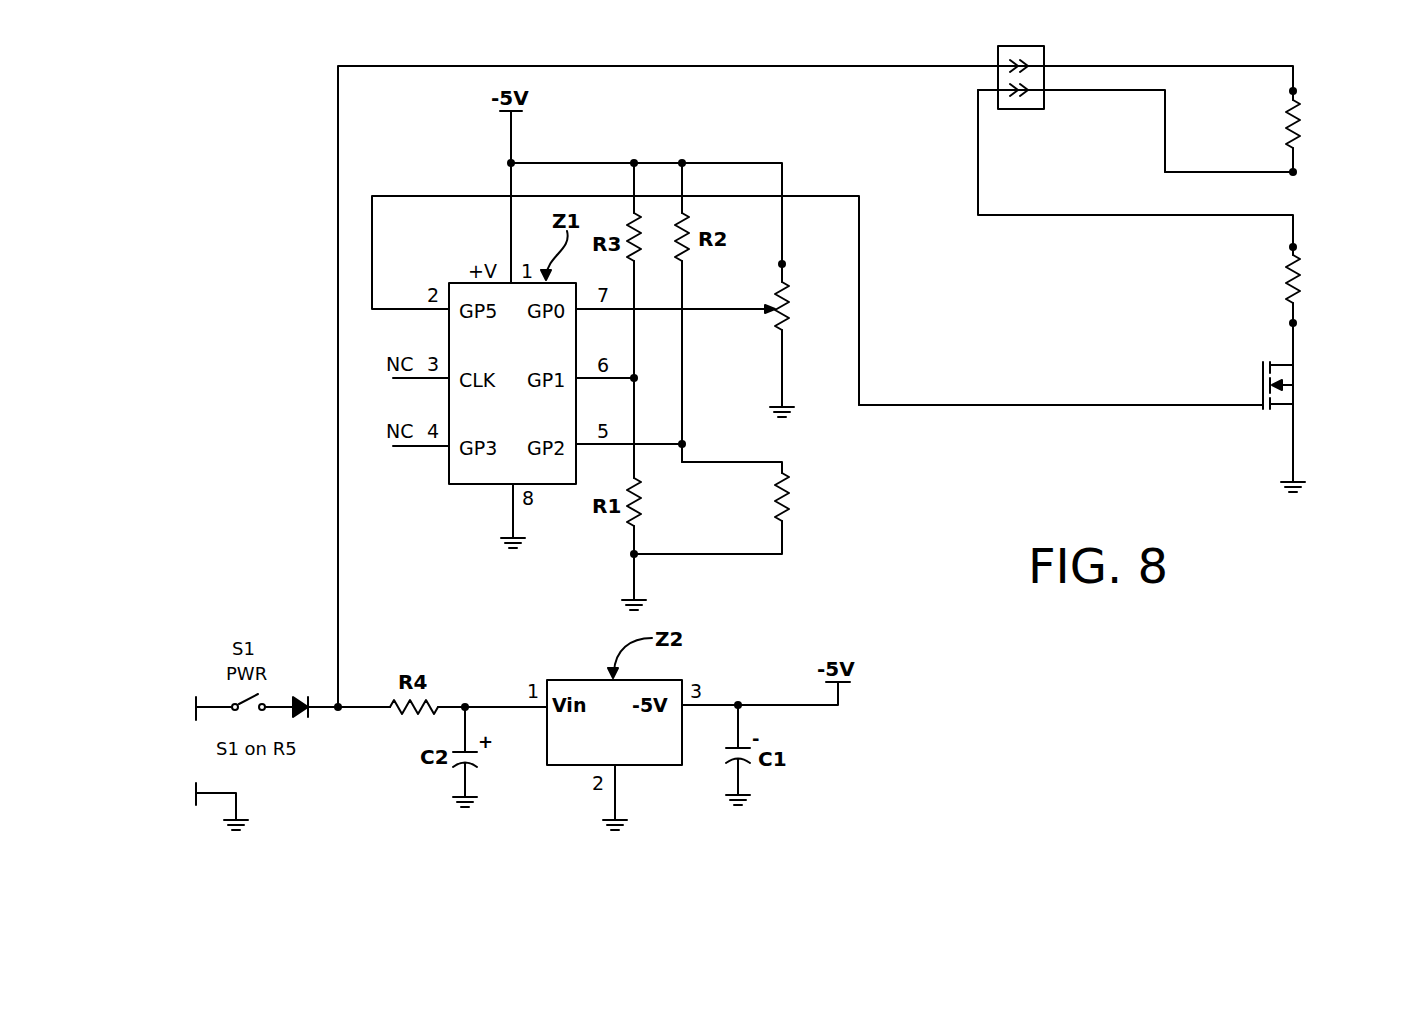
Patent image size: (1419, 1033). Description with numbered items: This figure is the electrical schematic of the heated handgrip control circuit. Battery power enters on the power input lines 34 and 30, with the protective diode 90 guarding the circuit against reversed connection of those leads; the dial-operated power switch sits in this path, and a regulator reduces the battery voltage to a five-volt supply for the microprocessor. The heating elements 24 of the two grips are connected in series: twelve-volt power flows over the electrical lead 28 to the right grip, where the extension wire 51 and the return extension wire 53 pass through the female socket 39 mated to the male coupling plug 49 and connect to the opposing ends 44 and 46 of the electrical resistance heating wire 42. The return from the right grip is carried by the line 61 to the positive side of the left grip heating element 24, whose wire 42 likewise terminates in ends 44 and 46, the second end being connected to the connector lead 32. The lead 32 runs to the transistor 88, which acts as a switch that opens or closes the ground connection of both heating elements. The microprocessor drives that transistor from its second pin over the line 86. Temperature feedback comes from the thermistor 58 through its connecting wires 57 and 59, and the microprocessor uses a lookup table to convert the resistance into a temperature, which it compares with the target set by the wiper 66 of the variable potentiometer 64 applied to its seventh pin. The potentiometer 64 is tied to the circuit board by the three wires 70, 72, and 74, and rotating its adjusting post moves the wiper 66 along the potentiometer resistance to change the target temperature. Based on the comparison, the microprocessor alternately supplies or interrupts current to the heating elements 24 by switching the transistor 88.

The electrical resistance heating element 24 is at (1291, 209).
The electrical lead 28 is at (337, 280).
The power input line 30 is at (217, 793).
The connector lead 32 is at (1295, 346).
The power input line 34 is at (207, 703).
The female socket 39 is at (1045, 54).
The electrical resistance heating wire 42 is at (1285, 125).
The heating wire end 44 is at (1296, 90).
The heating wire end 46 is at (1291, 174).
The male coupling plug 49 is at (998, 78).
The extension wire 51 is at (1170, 65).
The extension wire 53 is at (1160, 130).
The thermistor connecting wire 57 is at (735, 461).
The thermistor 58 is at (797, 497).
The thermistor connecting wire 59 is at (738, 556).
The connector lead 61 is at (1082, 216).
The variable potentiometer 64 is at (798, 325).
The wiper 66 is at (742, 308).
The potentiometer wire 70 is at (662, 447).
The potentiometer wire 72 is at (632, 575).
The potentiometer wire 74 is at (656, 313).
The driving output line 86 is at (431, 196).
The transistor 88 is at (1297, 387).
The protective diode 90 is at (302, 700).